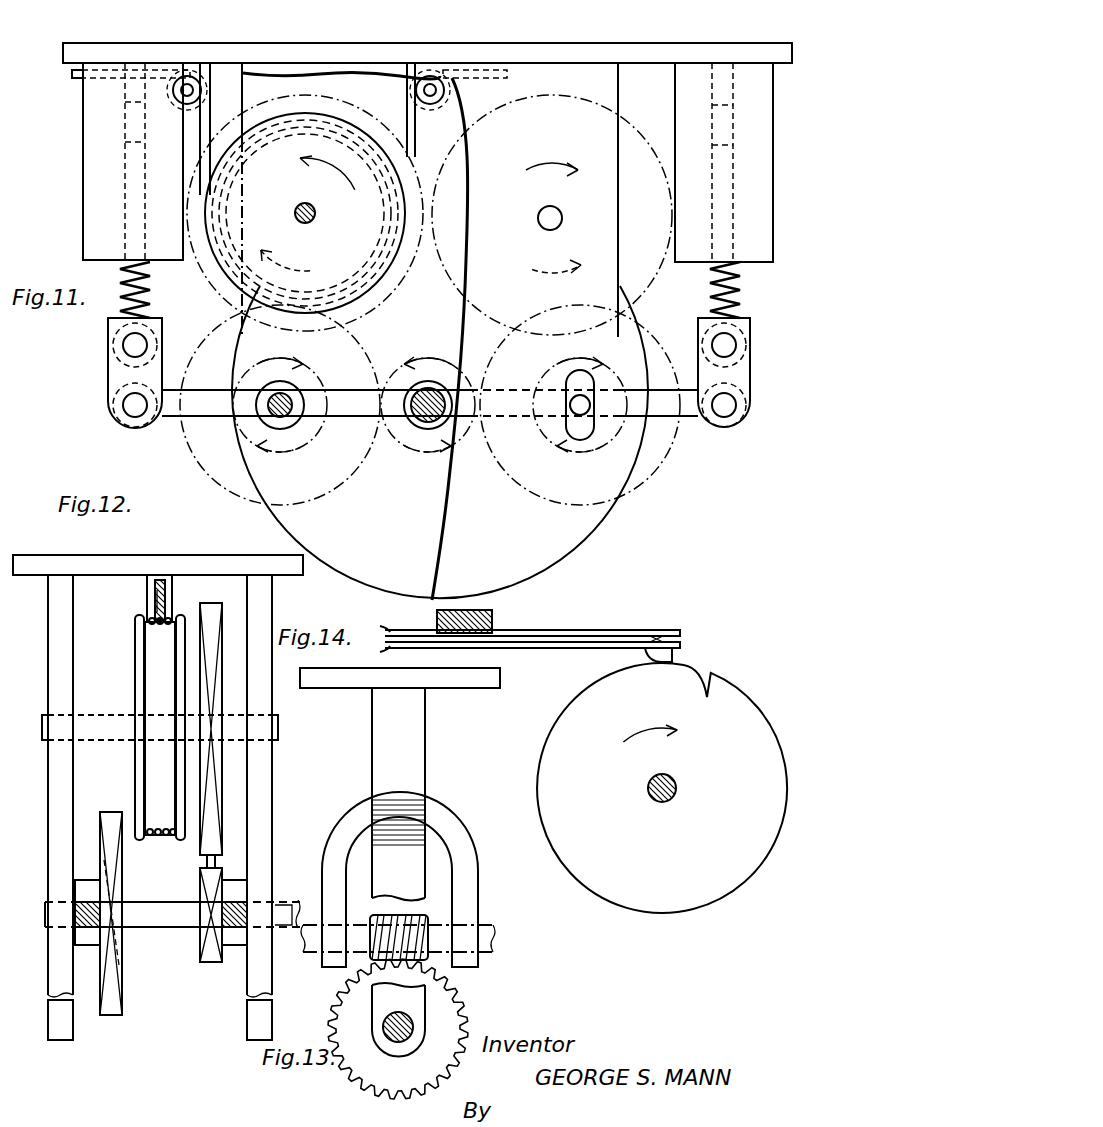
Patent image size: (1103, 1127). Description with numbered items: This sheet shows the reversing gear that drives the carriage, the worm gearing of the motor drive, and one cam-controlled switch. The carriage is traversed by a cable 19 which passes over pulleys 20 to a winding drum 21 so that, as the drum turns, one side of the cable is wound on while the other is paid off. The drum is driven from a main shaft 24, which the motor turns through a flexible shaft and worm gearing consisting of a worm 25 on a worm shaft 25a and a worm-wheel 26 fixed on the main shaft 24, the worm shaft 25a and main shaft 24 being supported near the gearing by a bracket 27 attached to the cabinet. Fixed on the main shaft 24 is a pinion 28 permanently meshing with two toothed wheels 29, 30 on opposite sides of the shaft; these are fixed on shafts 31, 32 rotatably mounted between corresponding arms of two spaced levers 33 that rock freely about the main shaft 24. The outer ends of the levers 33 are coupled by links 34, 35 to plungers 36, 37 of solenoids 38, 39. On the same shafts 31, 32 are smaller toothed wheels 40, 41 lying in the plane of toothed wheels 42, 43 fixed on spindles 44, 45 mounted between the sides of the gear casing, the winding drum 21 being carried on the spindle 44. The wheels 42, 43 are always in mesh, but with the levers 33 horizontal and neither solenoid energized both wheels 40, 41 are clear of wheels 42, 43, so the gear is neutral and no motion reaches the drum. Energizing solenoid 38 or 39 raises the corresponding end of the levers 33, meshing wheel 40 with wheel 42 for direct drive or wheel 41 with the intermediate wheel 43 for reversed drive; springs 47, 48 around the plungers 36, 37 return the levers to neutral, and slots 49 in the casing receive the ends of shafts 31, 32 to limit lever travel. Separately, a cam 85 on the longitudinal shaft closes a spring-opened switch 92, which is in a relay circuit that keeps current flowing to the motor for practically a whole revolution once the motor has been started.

In FIG. 11, the cable 19 is at (201, 84).
In FIG. 12, the cable 19 is at (162, 603).
In FIG. 11, the pulleys 20 is at (185, 95).
In FIG. 12, the pulleys 20 is at (170, 593).
In FIG. 11, the winding drum 21 is at (400, 167).
In FIG. 12, the winding drum 21 is at (158, 787).
In FIG. 11, the main shaft 24 is at (420, 420).
In FIG. 12, the main shaft 24 is at (290, 935).
In FIG. 13, the main shaft 24 is at (392, 1040).
In FIG. 13, the worm 25 is at (425, 926).
In FIG. 13, the worm shaft 25a is at (483, 947).
In FIG. 13, the worm-wheel 26 is at (450, 1010).
In FIG. 13, the bracket 27 is at (446, 832).
In FIG. 11, the pinion 28 is at (472, 480).
In FIG. 12, the pinion 28 is at (119, 972).
In FIG. 11, the toothed wheel 29 is at (200, 465).
In FIG. 12, the toothed wheel 29 is at (100, 828).
In FIG. 11, the toothed wheel 30 is at (640, 468).
In FIG. 11, the shaft 31 is at (292, 398).
In FIG. 12, the shaft 31 is at (154, 908).
In FIG. 11, the shaft 32 is at (578, 410).
In FIG. 11, the levers 33 is at (333, 420).
In FIG. 12, the levers 33 is at (75, 903).
In FIG. 11, the link 34 is at (112, 368).
In FIG. 11, the link 35 is at (740, 365).
In FIG. 11, the plunger 36 is at (125, 193).
In FIG. 11, the plunger 37 is at (736, 262).
In FIG. 11, the solenoid 38 is at (95, 155).
In FIG. 11, the solenoid 39 is at (690, 86).
In FIG. 11, the smaller toothed wheel 40 is at (240, 420).
In FIG. 12, the smaller toothed wheel 40 is at (211, 965).
In FIG. 11, the smaller toothed wheel 41 is at (620, 430).
In FIG. 11, the toothed wheel 42 is at (200, 275).
In FIG. 12, the toothed wheel 42 is at (222, 786).
In FIG. 11, the toothed wheel 43 is at (452, 282).
In FIG. 11, the spindle 44 is at (315, 218).
In FIG. 12, the spindle 44 is at (120, 745).
In FIG. 11, the spindle 45 is at (550, 207).
In FIG. 11, the spring 47 is at (112, 268).
In FIG. 11, the spring 48 is at (737, 295).
In FIG. 11, the slots 49 is at (575, 380).
In FIG. 14, the cam 85 is at (722, 708).
In FIG. 14, the switch 92 is at (583, 640).